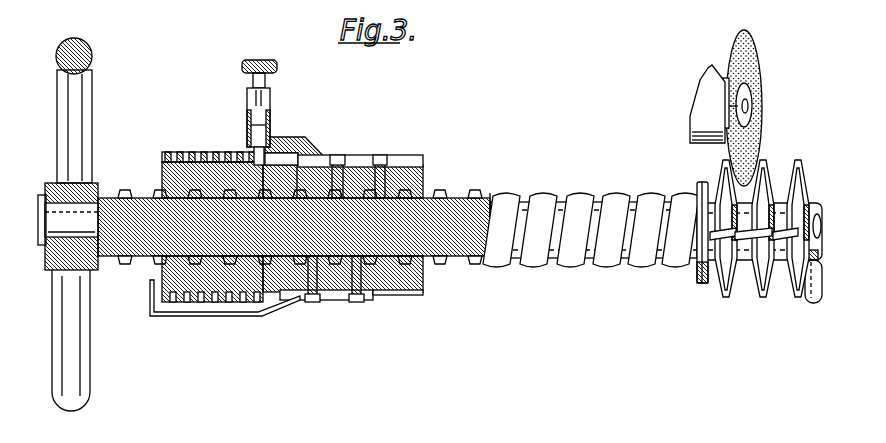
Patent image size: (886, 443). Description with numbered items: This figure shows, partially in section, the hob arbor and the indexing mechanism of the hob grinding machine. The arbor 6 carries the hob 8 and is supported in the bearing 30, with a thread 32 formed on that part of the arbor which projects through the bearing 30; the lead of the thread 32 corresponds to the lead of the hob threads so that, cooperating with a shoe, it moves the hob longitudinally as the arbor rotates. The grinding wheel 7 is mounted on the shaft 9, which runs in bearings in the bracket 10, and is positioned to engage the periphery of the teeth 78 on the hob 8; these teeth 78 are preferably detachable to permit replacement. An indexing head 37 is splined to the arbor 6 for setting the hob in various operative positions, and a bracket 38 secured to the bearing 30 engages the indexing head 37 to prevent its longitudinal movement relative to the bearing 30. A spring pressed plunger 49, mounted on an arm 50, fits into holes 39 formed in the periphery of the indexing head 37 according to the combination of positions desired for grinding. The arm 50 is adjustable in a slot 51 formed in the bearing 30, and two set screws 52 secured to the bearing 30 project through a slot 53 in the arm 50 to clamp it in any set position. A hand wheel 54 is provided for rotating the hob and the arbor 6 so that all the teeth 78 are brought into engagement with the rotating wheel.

The arbor 6 is at (565, 259).
The grinding wheel 7 is at (757, 62).
The hob 8 is at (700, 286).
The shaft 9 is at (719, 103).
The bracket 10 is at (714, 66).
The bearing 30 is at (425, 170).
The thread 32 is at (495, 191).
The indexing head 37 is at (162, 160).
The bracket 38 is at (265, 317).
The holes 39 is at (190, 153).
The spring pressed plunger 49 is at (265, 83).
The arm 50 is at (283, 137).
The slot 51 is at (300, 161).
The set screws 52 is at (375, 158).
The slot 53 is at (396, 156).
The hand wheel 54 is at (90, 400).
The teeth 78 is at (797, 168).